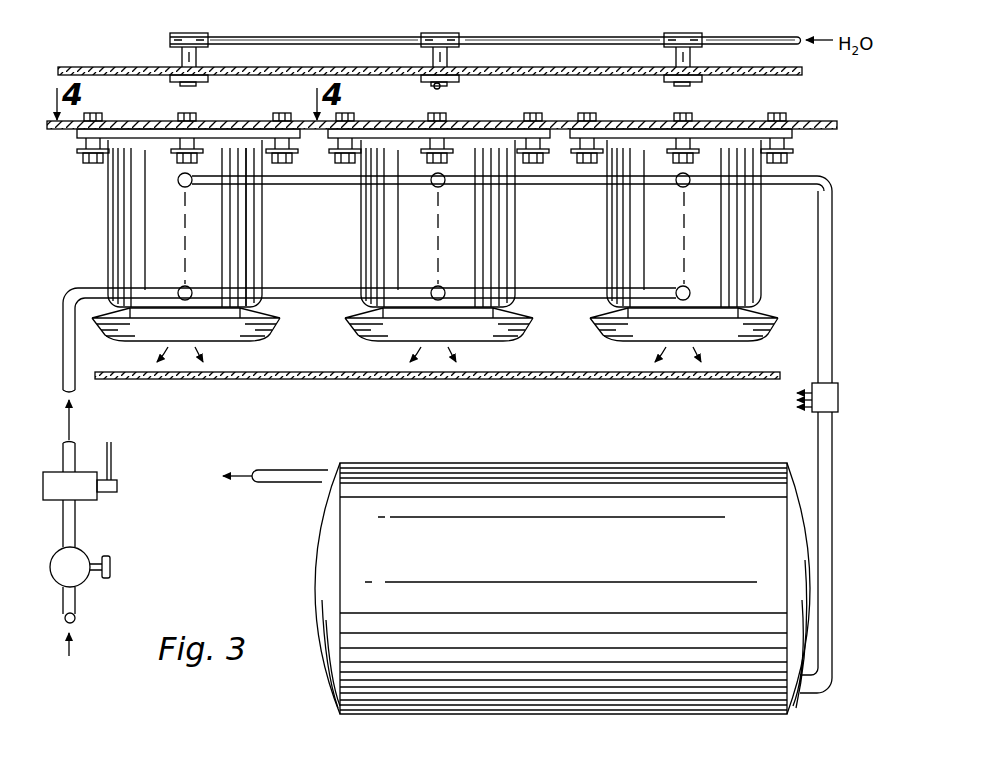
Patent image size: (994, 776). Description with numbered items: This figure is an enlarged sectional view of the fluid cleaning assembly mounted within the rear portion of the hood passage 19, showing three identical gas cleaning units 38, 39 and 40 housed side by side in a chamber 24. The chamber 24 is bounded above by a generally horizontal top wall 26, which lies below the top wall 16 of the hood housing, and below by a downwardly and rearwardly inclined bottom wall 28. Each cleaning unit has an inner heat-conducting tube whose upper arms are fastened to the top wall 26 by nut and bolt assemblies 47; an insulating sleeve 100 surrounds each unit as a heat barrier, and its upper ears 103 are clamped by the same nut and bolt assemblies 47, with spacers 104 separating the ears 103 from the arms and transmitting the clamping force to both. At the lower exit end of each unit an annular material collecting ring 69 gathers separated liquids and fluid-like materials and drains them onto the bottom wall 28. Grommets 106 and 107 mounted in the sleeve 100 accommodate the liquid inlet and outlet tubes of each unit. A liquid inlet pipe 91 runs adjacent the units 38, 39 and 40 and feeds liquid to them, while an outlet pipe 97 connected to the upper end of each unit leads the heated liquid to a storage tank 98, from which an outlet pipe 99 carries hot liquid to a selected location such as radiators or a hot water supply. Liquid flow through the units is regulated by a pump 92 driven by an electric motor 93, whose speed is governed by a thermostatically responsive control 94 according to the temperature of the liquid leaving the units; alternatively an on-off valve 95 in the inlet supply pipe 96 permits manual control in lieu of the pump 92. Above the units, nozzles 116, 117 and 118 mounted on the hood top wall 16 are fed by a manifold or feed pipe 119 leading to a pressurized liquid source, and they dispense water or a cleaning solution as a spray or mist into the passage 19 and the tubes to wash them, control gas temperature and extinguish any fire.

The feed pipe 119 is at (525, 37).
The nozzle 116 is at (187, 87).
The nozzle 117 is at (425, 84).
The nozzle 118 is at (680, 85).
The top wall 16 is at (770, 70).
The passage 19 is at (132, 86).
The top wall 26 is at (818, 123).
The nut and bolt assemblies 47 is at (94, 113).
The spacers 104 is at (106, 136).
The ears 103 is at (74, 152).
The gas cleaning unit 38 is at (107, 214).
The gas cleaning unit 39 is at (361, 225).
The gas cleaning unit 40 is at (607, 232).
The sleeve 100 is at (246, 219).
The grommet 107 is at (185, 188).
The grommet 106 is at (183, 285).
The liquid inlet pipe 91 is at (556, 289).
The chamber 24 is at (303, 257).
The material collecting ring 69 is at (262, 333).
The outlet pipe 97 is at (823, 252).
The thermostatically responsive control 94 is at (839, 398).
The bottom wall 28 is at (544, 382).
The storage tank 98 is at (481, 462).
The outlet pipe 99 is at (308, 469).
The pump 92 is at (96, 500).
The electric motor 93 is at (118, 486).
The on-off valve 95 is at (88, 551).
The inlet supply pipe 96 is at (75, 617).